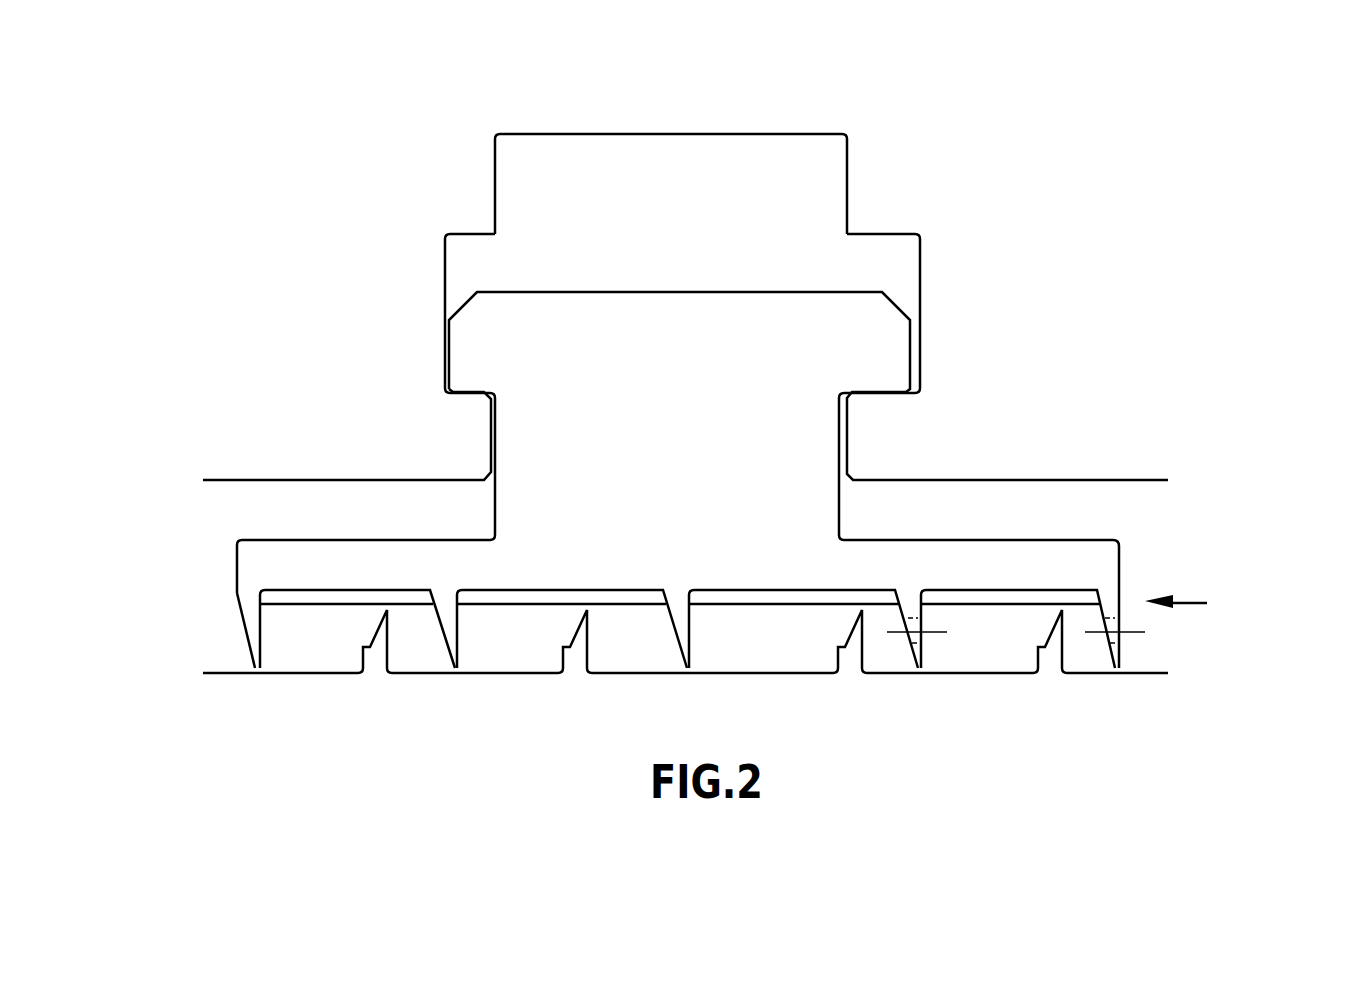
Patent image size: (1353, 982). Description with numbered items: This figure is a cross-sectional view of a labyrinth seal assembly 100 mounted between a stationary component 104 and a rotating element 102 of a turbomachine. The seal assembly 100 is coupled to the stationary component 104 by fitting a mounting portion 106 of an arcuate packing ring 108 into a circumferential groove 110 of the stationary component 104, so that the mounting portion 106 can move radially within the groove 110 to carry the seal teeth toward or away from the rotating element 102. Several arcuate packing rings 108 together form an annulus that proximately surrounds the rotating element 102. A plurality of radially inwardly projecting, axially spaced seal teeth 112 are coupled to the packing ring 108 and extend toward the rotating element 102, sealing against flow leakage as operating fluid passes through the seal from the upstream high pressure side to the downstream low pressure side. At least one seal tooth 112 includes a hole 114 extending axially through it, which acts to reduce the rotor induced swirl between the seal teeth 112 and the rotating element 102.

The seal assembly 100 is at (280, 191).
The rotating element 102 is at (485, 737).
The stationary component 104 is at (692, 90).
The mounting portion 106 is at (732, 370).
The arcuate packing ring 108 is at (887, 540).
The groove 110 is at (685, 214).
The seal teeth 112 is at (678, 628).
The hole 114 is at (932, 640).